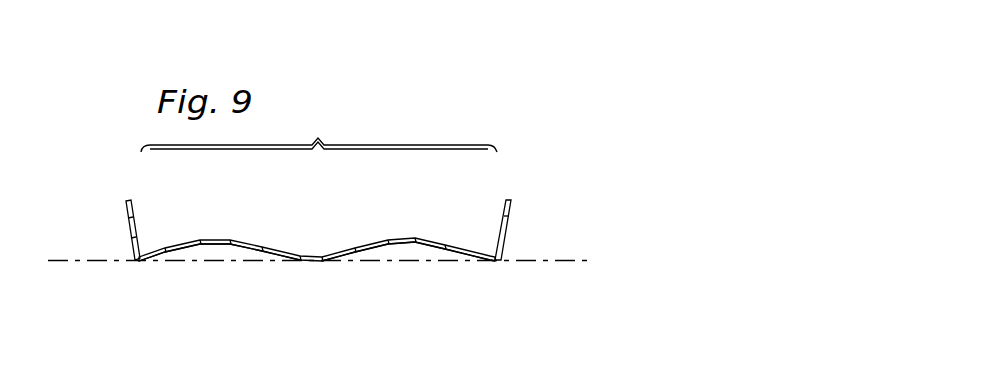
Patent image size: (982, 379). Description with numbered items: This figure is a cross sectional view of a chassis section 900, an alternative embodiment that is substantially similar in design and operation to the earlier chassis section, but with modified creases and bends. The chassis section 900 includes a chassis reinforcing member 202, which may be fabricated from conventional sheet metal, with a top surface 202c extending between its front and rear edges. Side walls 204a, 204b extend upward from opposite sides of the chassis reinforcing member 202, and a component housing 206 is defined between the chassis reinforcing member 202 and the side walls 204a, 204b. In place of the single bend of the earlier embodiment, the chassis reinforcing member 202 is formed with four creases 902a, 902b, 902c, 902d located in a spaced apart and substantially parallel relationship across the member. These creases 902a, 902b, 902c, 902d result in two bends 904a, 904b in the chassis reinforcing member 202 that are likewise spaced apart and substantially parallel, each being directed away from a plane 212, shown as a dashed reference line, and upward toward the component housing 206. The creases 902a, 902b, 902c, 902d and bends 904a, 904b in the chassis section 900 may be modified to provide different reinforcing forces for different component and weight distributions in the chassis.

The chassis section 900 is at (368, 125).
The component housing 206 is at (319, 128).
The chassis reinforcing member 202 is at (124, 190).
The top surface 202c is at (295, 247).
The side wall 204a is at (129, 234).
The side wall 204b is at (512, 220).
The plane 212 is at (112, 263).
The modified crease 902a is at (203, 240).
The modified crease 902b is at (247, 240).
The modified crease 902c is at (388, 239).
The modified crease 902d is at (433, 239).
The modified bend 904a is at (165, 263).
The modified bend 904b is at (365, 257).